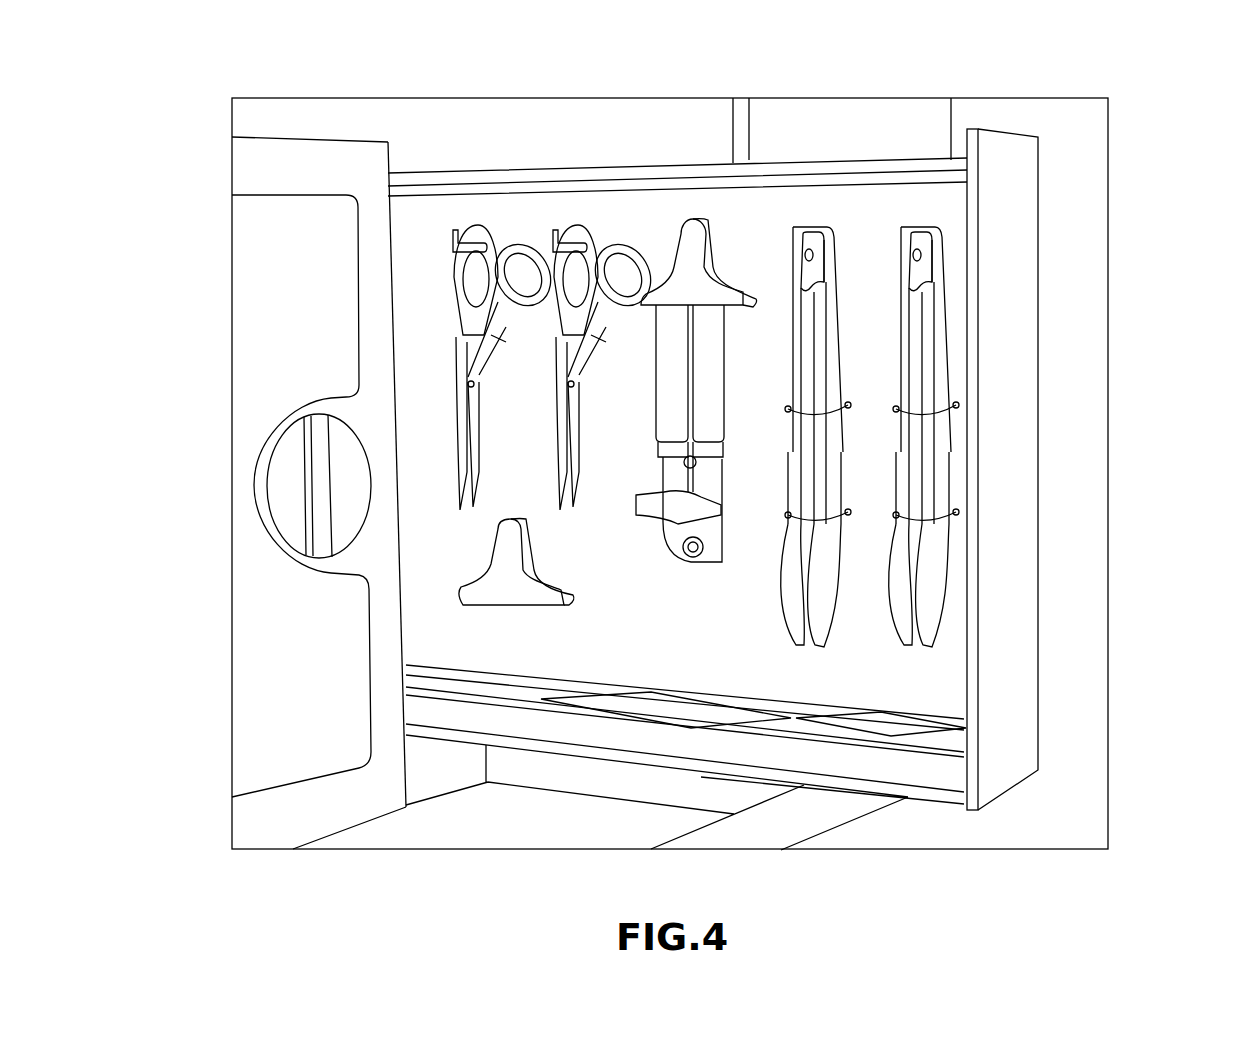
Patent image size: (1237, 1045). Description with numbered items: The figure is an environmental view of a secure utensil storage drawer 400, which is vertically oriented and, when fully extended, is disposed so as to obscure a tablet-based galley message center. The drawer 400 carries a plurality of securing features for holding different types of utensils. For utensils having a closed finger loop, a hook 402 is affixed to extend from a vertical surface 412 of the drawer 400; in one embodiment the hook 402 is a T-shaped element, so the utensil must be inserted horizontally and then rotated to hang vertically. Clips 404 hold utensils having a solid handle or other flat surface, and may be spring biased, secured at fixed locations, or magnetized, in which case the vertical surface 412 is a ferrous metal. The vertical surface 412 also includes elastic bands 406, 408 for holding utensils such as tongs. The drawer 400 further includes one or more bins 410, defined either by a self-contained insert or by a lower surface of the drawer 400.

The secure utensil storage drawer 400 is at (1007, 178).
The hook 402 is at (455, 228).
The clip 404 is at (693, 238).
The elastic band 406 is at (850, 402).
The elastic band 408 is at (850, 510).
The bin 410 is at (880, 732).
The vertical surface 412 is at (868, 208).